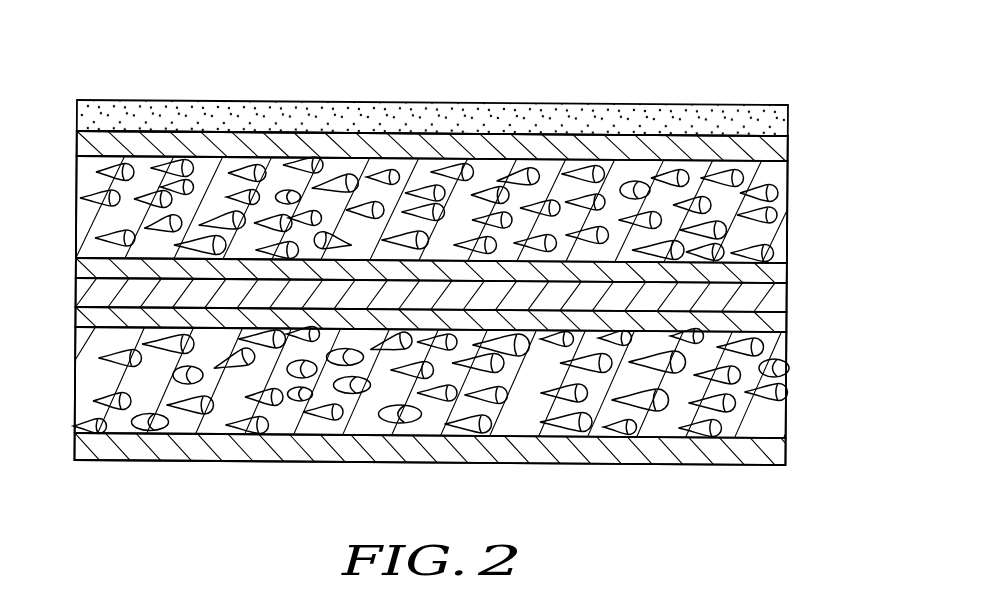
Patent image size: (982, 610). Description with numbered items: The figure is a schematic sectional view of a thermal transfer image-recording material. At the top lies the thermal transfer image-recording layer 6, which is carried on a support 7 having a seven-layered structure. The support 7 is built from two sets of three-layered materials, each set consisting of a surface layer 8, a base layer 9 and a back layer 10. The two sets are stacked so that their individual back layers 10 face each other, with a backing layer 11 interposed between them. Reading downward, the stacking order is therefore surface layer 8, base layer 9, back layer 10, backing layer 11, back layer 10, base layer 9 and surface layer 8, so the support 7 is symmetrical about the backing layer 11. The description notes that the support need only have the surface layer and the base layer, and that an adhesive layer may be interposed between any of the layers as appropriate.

The thermal transfer image-recording layer 6 is at (695, 108).
The support 7 is at (865, 121).
The surface layer 8 is at (779, 153).
The base layer 9 is at (770, 235).
The back layer 10 is at (787, 277).
The backing layer 11 is at (780, 300).